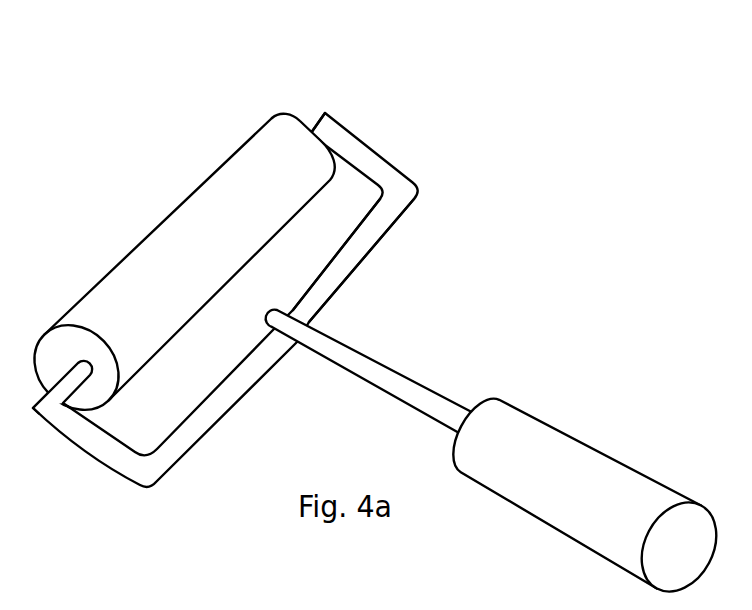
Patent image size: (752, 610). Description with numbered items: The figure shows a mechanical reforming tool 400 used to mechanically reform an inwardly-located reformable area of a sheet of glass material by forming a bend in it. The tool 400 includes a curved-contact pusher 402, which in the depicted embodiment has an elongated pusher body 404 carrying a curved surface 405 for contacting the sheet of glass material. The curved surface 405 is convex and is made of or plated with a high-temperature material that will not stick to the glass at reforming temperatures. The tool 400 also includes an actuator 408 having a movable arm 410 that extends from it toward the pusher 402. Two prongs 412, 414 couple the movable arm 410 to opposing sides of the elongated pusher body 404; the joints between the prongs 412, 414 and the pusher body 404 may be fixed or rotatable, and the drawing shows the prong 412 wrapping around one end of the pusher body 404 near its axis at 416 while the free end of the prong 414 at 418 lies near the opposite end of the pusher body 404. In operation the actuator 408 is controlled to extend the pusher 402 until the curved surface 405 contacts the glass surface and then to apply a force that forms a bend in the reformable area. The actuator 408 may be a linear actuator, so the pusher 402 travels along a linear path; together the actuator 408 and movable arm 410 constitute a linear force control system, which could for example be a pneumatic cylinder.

The mechanical reforming tool 400 is at (236, 88).
The curved-contact pusher 402 is at (214, 163).
The elongated pusher body 404 is at (182, 203).
The curved surface 405 is at (152, 252).
The actuator 408 is at (587, 462).
The movable arm 410 is at (407, 388).
The prong 412 is at (94, 449).
The prong 414 is at (385, 172).
The axle 416 is at (82, 363).
The frame end 418 is at (312, 126).